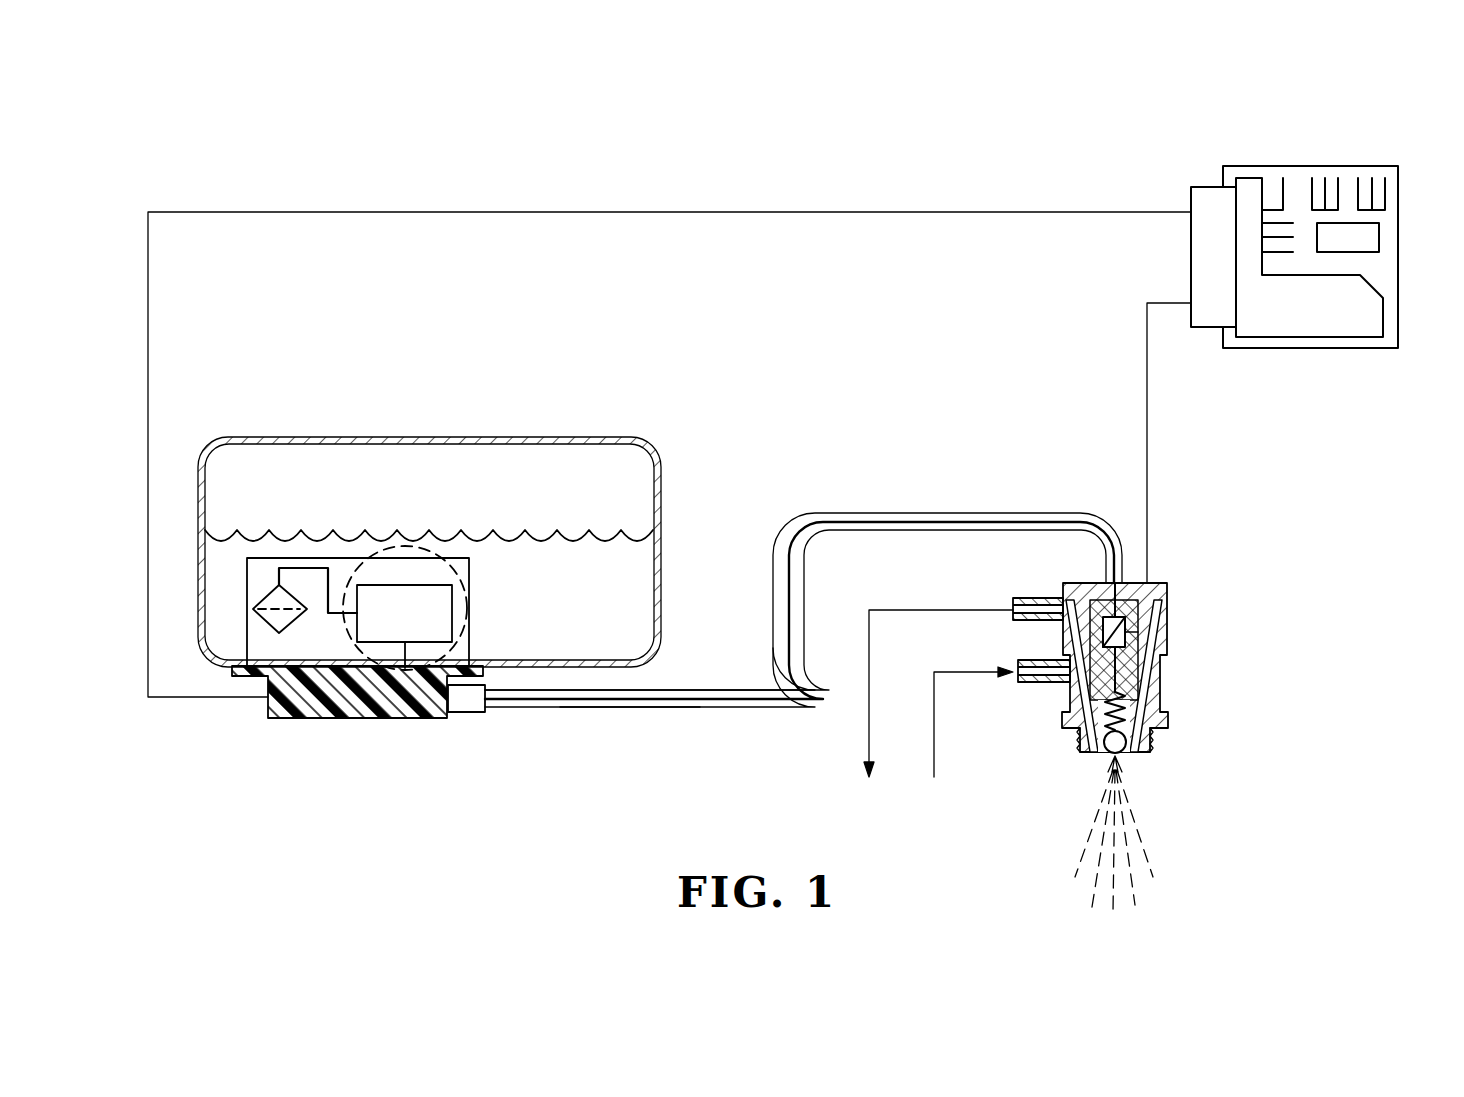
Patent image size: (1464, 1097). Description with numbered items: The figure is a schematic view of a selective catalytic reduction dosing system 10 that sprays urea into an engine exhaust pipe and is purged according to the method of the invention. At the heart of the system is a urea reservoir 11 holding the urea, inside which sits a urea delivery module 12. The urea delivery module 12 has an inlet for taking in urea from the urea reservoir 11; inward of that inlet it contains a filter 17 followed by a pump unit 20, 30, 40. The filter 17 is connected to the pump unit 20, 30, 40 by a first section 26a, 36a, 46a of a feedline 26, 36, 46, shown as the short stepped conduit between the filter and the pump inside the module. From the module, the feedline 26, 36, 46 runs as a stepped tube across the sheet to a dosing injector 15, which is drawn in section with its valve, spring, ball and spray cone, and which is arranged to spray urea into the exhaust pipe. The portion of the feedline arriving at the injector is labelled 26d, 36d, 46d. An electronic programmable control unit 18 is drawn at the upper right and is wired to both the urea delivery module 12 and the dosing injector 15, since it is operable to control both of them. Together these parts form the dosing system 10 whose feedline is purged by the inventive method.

The selective catalytic reduction dosing system 10 is at (362, 132).
The urea reservoir 11 is at (290, 437).
The urea delivery module 12 is at (268, 560).
The filter 17 is at (262, 600).
The electronic programmable control unit 18 is at (1400, 213).
The dosing injector 15 is at (1167, 642).
The pump unit 20 is at (327, 653).
The pump unit 30 is at (327, 653).
The pump unit 40 is at (368, 676).
The feedline 26 is at (757, 651).
The feedline 36 is at (757, 651).
The feedline 46 is at (573, 714).
The first section of feedline 26a is at (482, 485).
The first section of feedline 36a is at (482, 485).
The first section of feedline 46a is at (307, 565).
The conduit second end 26d is at (699, 747).
The conduit second end 36d is at (699, 747).
The conduit second end 46d is at (608, 708).